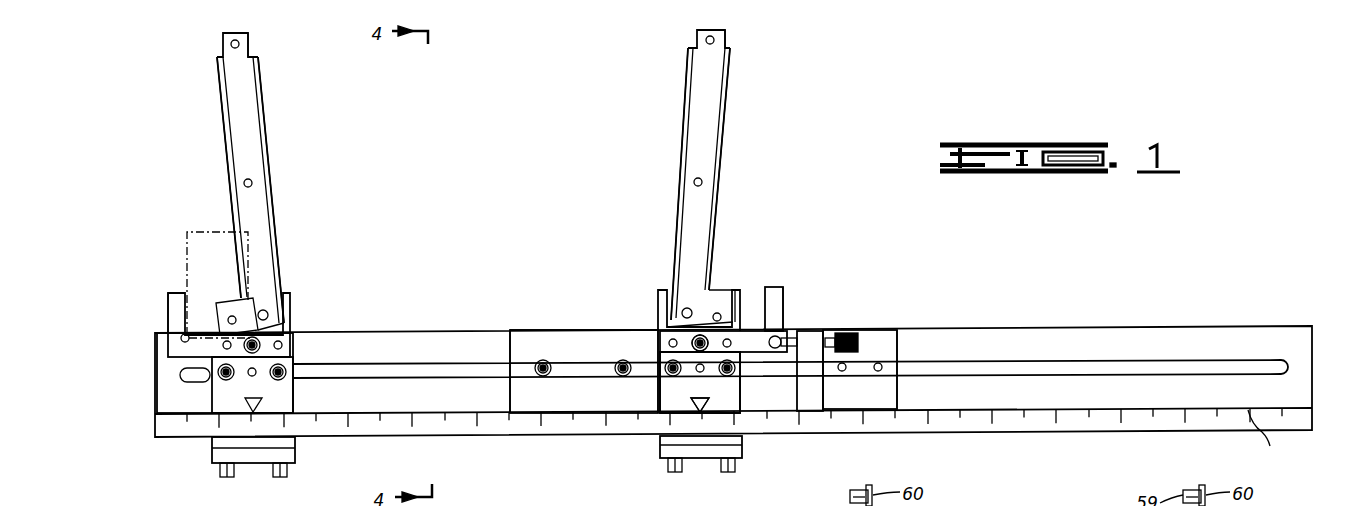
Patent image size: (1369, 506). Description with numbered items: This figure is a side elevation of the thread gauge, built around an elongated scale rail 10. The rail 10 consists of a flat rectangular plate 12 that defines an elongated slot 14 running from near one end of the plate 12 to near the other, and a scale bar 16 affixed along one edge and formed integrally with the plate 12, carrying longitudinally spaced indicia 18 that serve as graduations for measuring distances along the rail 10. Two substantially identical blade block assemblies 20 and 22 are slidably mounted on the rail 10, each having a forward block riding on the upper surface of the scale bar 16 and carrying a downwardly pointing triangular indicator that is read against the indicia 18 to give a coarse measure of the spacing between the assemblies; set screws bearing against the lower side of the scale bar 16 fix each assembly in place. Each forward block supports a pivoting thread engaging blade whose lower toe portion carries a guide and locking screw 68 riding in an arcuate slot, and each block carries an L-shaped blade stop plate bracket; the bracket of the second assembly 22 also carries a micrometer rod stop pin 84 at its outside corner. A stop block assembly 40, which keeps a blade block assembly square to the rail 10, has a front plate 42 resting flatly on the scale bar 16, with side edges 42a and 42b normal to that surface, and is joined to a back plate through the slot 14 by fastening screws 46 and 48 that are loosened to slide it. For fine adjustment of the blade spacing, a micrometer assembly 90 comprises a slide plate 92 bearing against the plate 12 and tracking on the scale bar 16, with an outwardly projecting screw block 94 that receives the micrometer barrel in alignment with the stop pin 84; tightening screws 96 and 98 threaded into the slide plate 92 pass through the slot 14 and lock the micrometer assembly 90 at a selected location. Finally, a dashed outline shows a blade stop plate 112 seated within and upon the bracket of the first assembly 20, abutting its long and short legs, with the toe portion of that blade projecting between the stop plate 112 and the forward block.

The scale rail 10 is at (1316, 351).
The plate 12 is at (1119, 351).
The slot 14 is at (1172, 368).
The scale bar 16 is at (1096, 430).
The indicia 18 is at (414, 432).
The blade block assembly 20 is at (190, 455).
The blade block assembly 22 is at (646, 460).
The stop block assembly 40 is at (543, 320).
The front plate 42 is at (592, 377).
The side edge 42a is at (655, 384).
The side edge 42b is at (508, 390).
The fastening screw 46 is at (541, 360).
The fastening screw 48 is at (621, 360).
The guide and locking screw 68 is at (719, 313).
The micrometer rod stop pin 84 is at (779, 338).
The micrometer assembly 90 is at (885, 318).
The slide plate 92 is at (884, 395).
The screw block 94 is at (808, 395).
The tightening screw 96 is at (882, 364).
The tightening screw 98 is at (842, 372).
The blade stop plate 112 is at (196, 232).